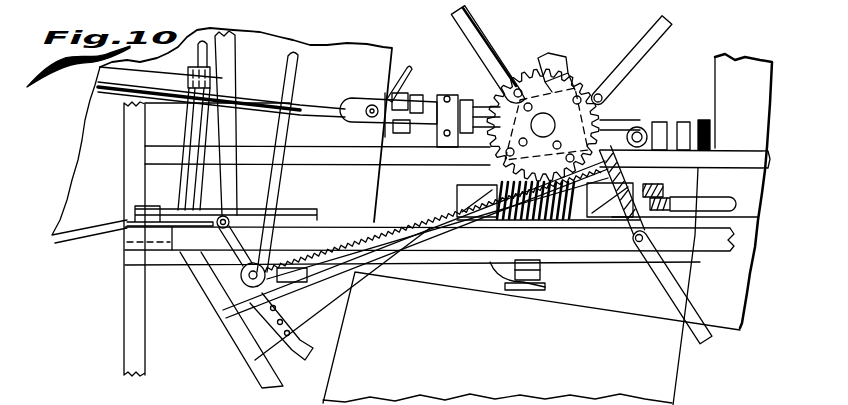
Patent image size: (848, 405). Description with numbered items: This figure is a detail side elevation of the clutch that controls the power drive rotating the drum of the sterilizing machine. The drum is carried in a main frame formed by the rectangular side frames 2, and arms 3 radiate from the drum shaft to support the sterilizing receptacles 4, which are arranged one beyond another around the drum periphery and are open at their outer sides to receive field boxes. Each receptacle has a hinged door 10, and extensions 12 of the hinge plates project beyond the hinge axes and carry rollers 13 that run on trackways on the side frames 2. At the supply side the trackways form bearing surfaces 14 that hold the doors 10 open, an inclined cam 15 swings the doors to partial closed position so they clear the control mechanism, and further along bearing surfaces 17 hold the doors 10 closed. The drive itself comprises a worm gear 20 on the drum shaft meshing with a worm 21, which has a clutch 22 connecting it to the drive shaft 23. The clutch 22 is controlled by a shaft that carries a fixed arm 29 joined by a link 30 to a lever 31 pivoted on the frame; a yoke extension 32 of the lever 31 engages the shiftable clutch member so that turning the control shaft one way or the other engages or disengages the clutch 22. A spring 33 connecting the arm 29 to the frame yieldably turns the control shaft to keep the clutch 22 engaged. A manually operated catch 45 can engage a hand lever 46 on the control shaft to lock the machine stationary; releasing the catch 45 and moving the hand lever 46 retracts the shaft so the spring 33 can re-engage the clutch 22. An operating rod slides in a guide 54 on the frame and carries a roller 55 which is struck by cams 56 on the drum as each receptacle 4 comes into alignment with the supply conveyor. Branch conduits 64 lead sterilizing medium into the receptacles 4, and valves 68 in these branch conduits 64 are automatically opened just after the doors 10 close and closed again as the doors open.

The side frames 2 is at (128, 315).
The arms 3 is at (473, 40).
The sterilizing receptacles 4 is at (520, 229).
The doors 10 is at (222, 135).
The extensions 12 is at (100, 87).
The rollers 13 is at (223, 75).
The bearing surfaces 14 is at (215, 128).
The cam 15 is at (230, 295).
The bearing surfaces 17 is at (743, 229).
The worm gear 20 is at (565, 68).
The worm 21 is at (556, 225).
The clutch 22 is at (575, 232).
The drive shaft 23 is at (738, 190).
The arm 29 is at (233, 342).
The link 30 is at (426, 238).
The lever 31 is at (626, 132).
The yoke extension 32 is at (757, 217).
The spring 33 is at (352, 250).
The catch 45 is at (283, 215).
The hand lever 46 is at (285, 177).
The guide 54 is at (455, 108).
The roller 55 is at (387, 93).
The cams 56 is at (408, 80).
The branch conduits 64 is at (667, 127).
The valves 68 is at (637, 127).